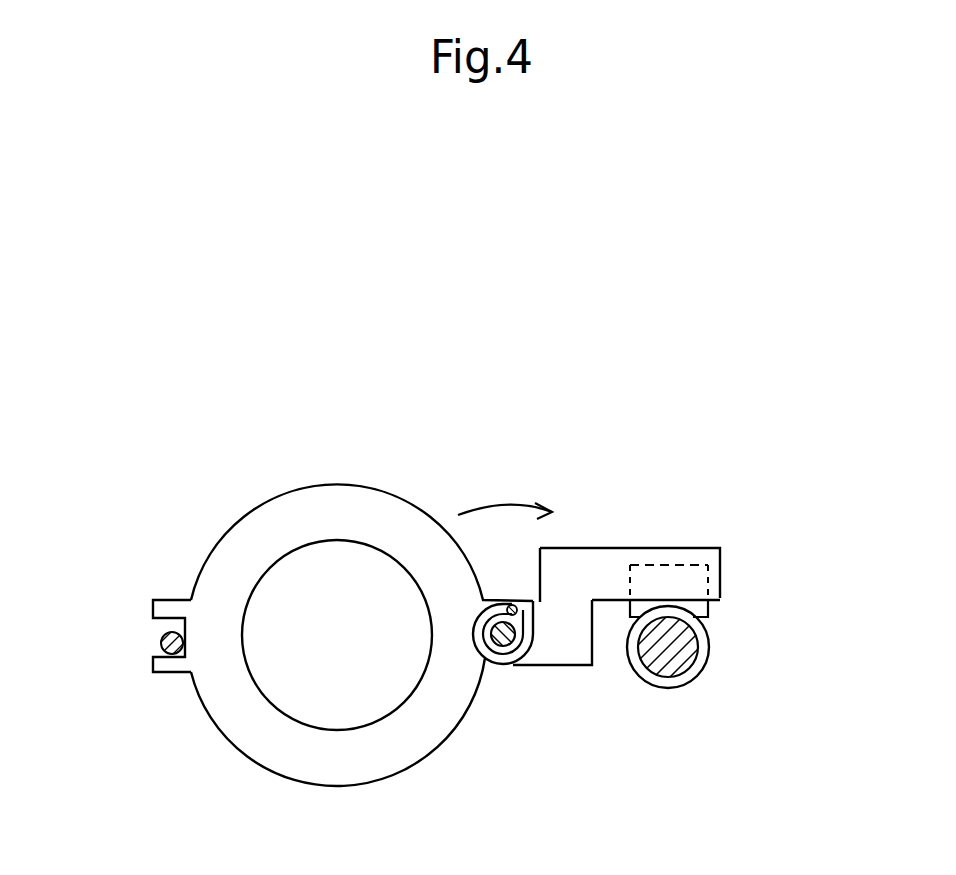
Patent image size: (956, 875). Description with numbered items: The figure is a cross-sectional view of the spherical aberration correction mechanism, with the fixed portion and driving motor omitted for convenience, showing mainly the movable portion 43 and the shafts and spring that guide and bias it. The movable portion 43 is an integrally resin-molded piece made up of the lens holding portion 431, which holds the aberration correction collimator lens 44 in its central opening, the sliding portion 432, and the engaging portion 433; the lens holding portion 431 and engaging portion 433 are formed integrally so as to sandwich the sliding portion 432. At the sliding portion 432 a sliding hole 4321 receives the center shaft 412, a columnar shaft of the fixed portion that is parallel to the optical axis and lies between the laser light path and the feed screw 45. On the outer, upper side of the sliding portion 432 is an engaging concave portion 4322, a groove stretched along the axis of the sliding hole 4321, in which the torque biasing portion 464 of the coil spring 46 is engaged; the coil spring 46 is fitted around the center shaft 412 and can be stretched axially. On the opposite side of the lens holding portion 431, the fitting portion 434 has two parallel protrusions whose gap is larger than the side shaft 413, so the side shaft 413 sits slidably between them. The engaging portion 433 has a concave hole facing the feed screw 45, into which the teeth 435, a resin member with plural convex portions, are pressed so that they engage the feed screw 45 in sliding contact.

The movable portion 43 is at (330, 495).
The lens holding portion 431 is at (238, 543).
The fitting portion 434 is at (163, 608).
The side shaft 413 is at (162, 647).
The aberration correction collimator lens 44 is at (345, 688).
The sliding hole 4321 is at (497, 642).
The center shaft 412 is at (500, 645).
The coil spring 46 is at (515, 645).
The sliding portion 432 is at (626, 642).
The feed screw 45 is at (697, 658).
The teeth 435 is at (720, 602).
The engaging portion 433 is at (710, 548).
The torque biasing portion 464 is at (523, 602).
The engaging concave portion 4322 is at (540, 597).